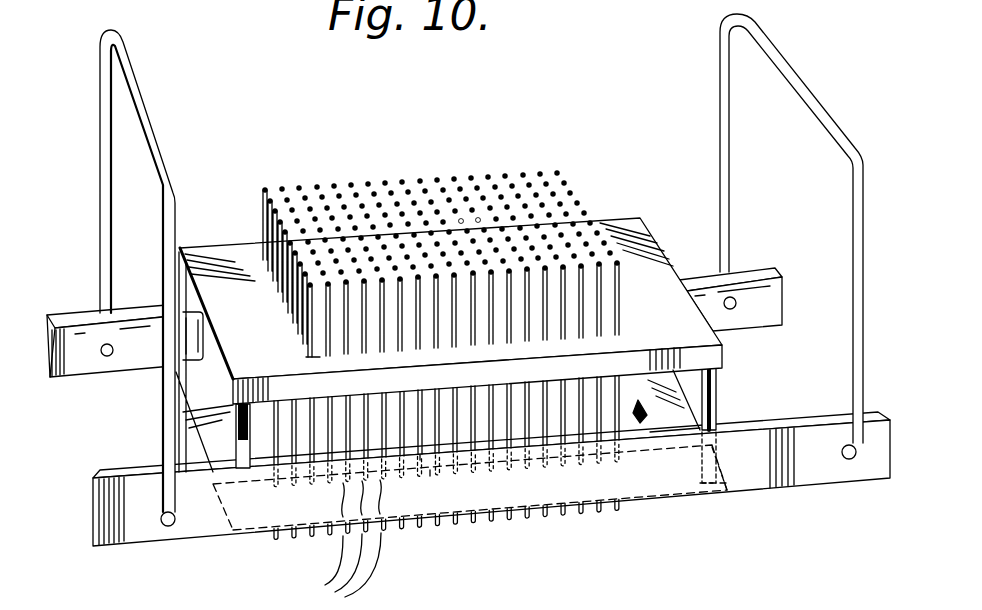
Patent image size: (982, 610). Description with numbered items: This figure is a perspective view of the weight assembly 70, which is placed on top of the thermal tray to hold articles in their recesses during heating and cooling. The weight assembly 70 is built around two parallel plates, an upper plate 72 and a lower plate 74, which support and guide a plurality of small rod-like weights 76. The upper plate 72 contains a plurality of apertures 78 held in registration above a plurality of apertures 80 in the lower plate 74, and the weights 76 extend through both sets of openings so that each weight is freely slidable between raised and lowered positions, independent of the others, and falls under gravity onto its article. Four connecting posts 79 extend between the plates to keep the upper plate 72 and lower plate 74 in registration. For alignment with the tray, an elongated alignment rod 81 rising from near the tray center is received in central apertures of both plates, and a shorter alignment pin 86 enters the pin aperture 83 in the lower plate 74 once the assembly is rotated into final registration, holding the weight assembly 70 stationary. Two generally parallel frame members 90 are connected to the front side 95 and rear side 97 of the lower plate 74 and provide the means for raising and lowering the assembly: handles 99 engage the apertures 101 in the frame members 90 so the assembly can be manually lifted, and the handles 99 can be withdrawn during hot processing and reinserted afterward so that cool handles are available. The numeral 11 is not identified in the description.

The support bar 11 is at (87, 340).
The weight assembly 70 is at (560, 138).
The upper plate 72 is at (213, 248).
The lower plate 74 is at (278, 458).
The weights 76 is at (470, 200).
The apertures 78 is at (312, 348).
The connecting posts 79 is at (198, 455).
The apertures 80 is at (345, 562).
The alignment rod 81 is at (483, 218).
The pin aperture 83 is at (638, 425).
The alignment pin 86 is at (647, 410).
The frame members 90 is at (107, 482).
The front side 95 is at (733, 490).
The rear side 97 is at (190, 330).
The handles 99 is at (163, 234).
The apertures 101 is at (107, 357).